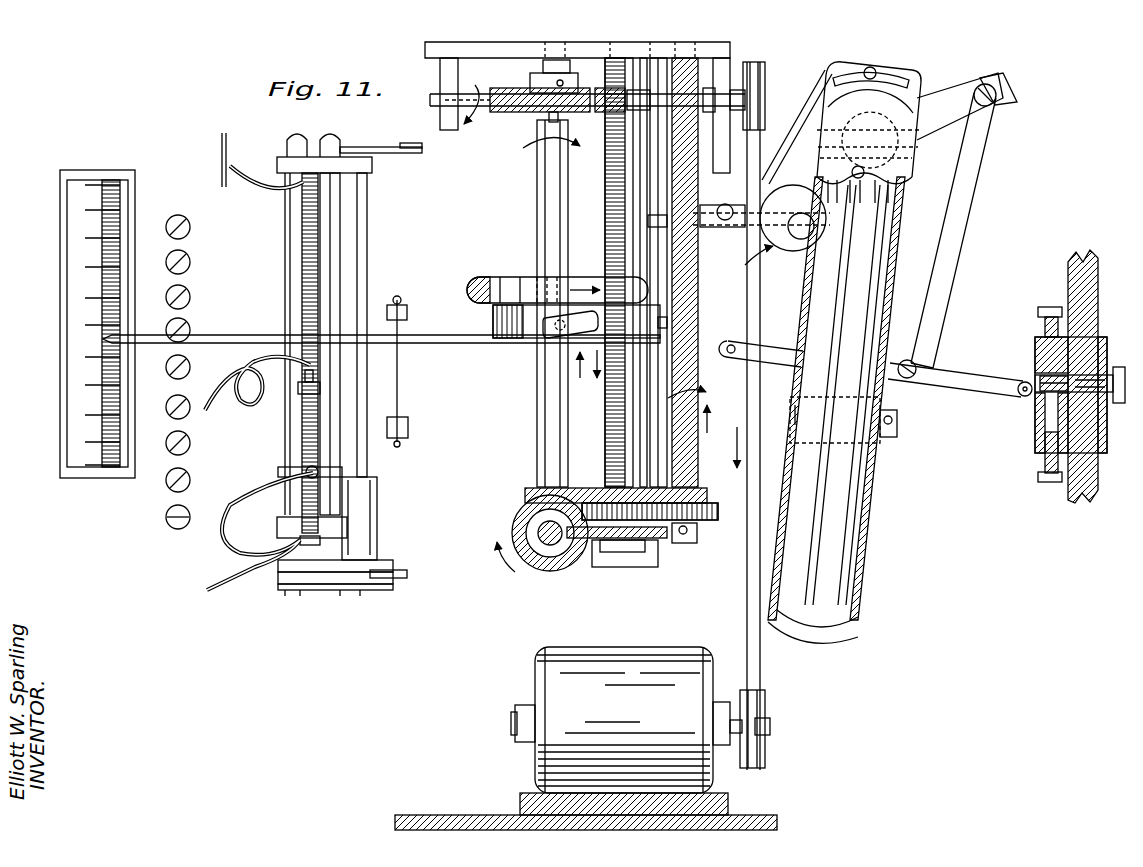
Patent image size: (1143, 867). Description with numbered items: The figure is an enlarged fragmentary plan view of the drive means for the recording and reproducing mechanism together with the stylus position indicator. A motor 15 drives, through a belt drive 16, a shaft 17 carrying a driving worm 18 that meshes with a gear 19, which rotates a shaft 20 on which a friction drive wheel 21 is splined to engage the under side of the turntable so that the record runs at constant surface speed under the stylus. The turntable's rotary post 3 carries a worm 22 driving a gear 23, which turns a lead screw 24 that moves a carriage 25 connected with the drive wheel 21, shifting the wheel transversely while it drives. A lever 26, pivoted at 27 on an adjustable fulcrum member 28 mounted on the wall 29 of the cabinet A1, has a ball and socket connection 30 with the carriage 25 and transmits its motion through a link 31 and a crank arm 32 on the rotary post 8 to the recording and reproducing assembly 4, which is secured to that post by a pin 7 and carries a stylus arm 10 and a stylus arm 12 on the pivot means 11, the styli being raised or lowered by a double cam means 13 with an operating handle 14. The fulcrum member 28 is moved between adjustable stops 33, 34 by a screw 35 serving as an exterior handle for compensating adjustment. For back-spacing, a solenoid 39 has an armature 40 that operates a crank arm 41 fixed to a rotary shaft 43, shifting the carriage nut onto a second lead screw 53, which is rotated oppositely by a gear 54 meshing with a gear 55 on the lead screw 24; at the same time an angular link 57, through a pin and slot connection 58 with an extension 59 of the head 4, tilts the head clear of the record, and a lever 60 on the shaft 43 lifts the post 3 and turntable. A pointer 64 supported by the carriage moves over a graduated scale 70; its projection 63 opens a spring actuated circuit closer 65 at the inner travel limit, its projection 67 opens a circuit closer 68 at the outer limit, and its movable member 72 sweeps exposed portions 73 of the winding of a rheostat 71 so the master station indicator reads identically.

The graduated scale 70 is at (90, 322).
The pointer 64 is at (262, 336).
The projection 67 is at (409, 310).
The projection 63 is at (404, 412).
The movable member 72 is at (298, 388).
The exposed portions of the winding 73 is at (304, 414).
The rheostat 71 is at (290, 476).
The circuit closer 65 is at (408, 577).
The circuit closer 68 is at (412, 150).
The shaft 17 is at (484, 104).
The driving worm 18 is at (532, 106).
The gear 19 is at (548, 134).
The shaft 20 is at (545, 226).
The friction drive wheel 21 is at (462, 290).
The ball and socket connection 30 is at (556, 340).
The lead screw 24 is at (608, 450).
The carriage 25 is at (600, 393).
The worm 22 is at (538, 560).
The rotary post 3 is at (551, 546).
The gear 23 is at (615, 540).
The gear 55 is at (680, 545).
The lever 60 is at (640, 568).
The gear 54 is at (700, 522).
The lead screw 53 is at (695, 440).
The motor 15 is at (619, 665).
The belt drive 16 is at (746, 606).
The rotary shaft 43 is at (662, 196).
The crank arm 41 is at (715, 230).
The armature 40 is at (777, 252).
The solenoid 39 is at (748, 268).
The lever 26 is at (735, 340).
The arm 12 is at (806, 292).
The double cam means 13 is at (800, 440).
The operating handle 14 is at (890, 440).
The adjustable stop 33 is at (898, 408).
The arm 10 is at (850, 525).
The recording and reproducing assembly 4 is at (872, 568).
The angular link 57 is at (795, 150).
The pin and slot connection 58 is at (876, 68).
The extension 59 is at (922, 95).
The crank arm 32 is at (985, 75).
The screw 35 is at (998, 100).
The pin 7 is at (840, 140).
The rotary post 8 is at (812, 167).
The pivot means 11 is at (900, 183).
The link 31 is at (958, 212).
The wall 29 is at (1102, 276).
The cabinet A1 is at (1080, 292).
The pivot 27 is at (1020, 396).
The adjustable fulcrum member 28 is at (1035, 430).
The adjustable stop 34 is at (1046, 484).